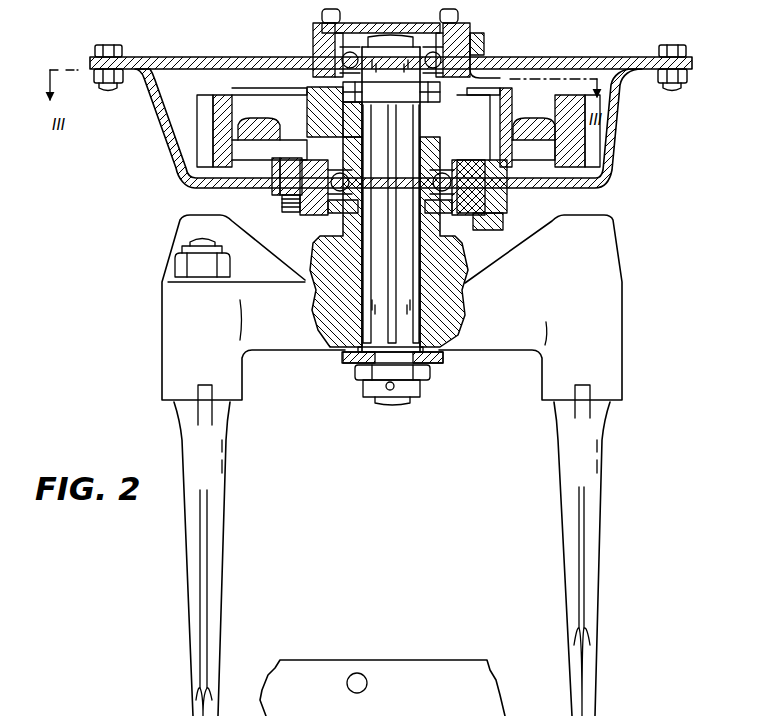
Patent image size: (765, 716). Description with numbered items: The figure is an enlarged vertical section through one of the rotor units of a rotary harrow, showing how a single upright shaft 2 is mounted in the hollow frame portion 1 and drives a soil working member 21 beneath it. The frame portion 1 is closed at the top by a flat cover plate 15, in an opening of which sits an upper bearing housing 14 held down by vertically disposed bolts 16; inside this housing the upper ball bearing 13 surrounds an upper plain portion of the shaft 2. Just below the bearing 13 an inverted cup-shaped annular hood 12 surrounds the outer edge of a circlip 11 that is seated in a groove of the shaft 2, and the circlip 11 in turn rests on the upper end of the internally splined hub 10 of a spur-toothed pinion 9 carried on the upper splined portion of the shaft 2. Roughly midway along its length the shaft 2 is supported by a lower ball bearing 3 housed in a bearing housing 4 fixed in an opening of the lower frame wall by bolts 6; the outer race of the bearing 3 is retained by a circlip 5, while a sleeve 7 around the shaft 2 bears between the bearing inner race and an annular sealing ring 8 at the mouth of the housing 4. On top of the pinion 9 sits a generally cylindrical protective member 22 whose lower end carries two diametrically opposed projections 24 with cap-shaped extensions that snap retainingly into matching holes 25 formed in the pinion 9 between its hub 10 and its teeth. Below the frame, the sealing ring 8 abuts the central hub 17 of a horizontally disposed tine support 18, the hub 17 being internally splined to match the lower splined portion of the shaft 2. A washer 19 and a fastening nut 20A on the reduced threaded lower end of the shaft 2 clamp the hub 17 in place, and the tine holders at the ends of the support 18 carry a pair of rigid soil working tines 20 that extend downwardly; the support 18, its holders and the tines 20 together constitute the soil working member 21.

The hollow frame portion 1 is at (165, 143).
The shaft 2 is at (405, 270).
The lower ball bearing 3 is at (500, 213).
The bearing housing 4 is at (497, 222).
The circlip 5 is at (478, 218).
The bolt 6 is at (293, 212).
The sleeve 7 is at (389, 244).
The annular sealing ring 8 is at (322, 270).
The pinion 9 is at (207, 150).
The hub 10 is at (440, 116).
The circlip 11 is at (460, 97).
The annular hood 12 is at (490, 60).
The upper ball bearing 13 is at (460, 48).
The upper bearing housing 14 is at (305, 57).
The cover plate 15 is at (201, 57).
The bolt 16 is at (322, 10).
The central hub 17 is at (342, 353).
The tine support 18 is at (498, 354).
The washer 19 is at (443, 363).
The soil working tine 20 is at (223, 510).
The fastening nut 20A is at (416, 396).
The soil working member 21 is at (401, 491).
The protective member 22 is at (308, 81).
The projection 24 is at (268, 122).
The hole 25 is at (514, 137).